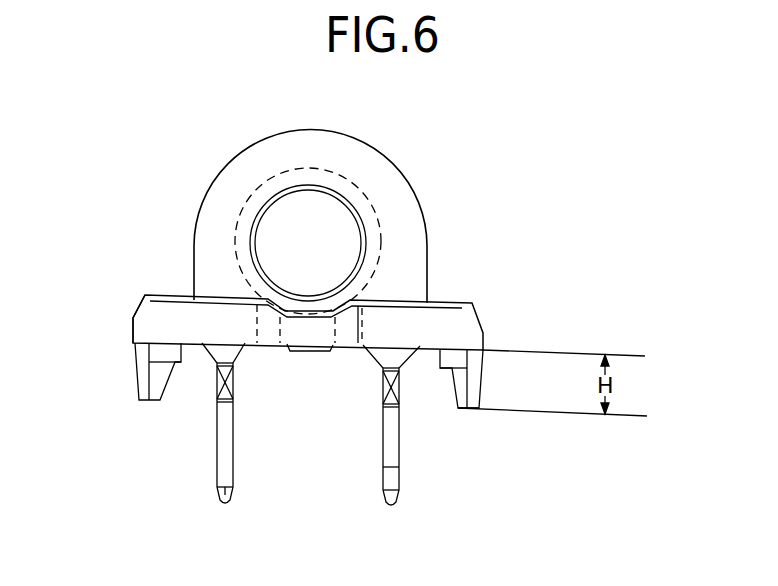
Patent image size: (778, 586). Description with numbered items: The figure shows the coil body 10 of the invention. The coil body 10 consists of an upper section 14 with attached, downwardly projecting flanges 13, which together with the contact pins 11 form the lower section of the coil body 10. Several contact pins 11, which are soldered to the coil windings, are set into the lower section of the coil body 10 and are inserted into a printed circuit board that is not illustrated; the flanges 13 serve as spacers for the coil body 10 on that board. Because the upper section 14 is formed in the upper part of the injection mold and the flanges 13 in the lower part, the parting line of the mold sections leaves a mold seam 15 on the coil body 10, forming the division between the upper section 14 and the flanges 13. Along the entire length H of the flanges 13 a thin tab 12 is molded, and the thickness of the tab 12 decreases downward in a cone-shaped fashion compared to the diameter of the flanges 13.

The coil body 10 is at (424, 199).
The contact pins 11 is at (223, 506).
The tab 12 is at (465, 411).
The flanges 13 is at (140, 373).
The upper section 14 is at (453, 325).
The mold seam 15 is at (137, 345).